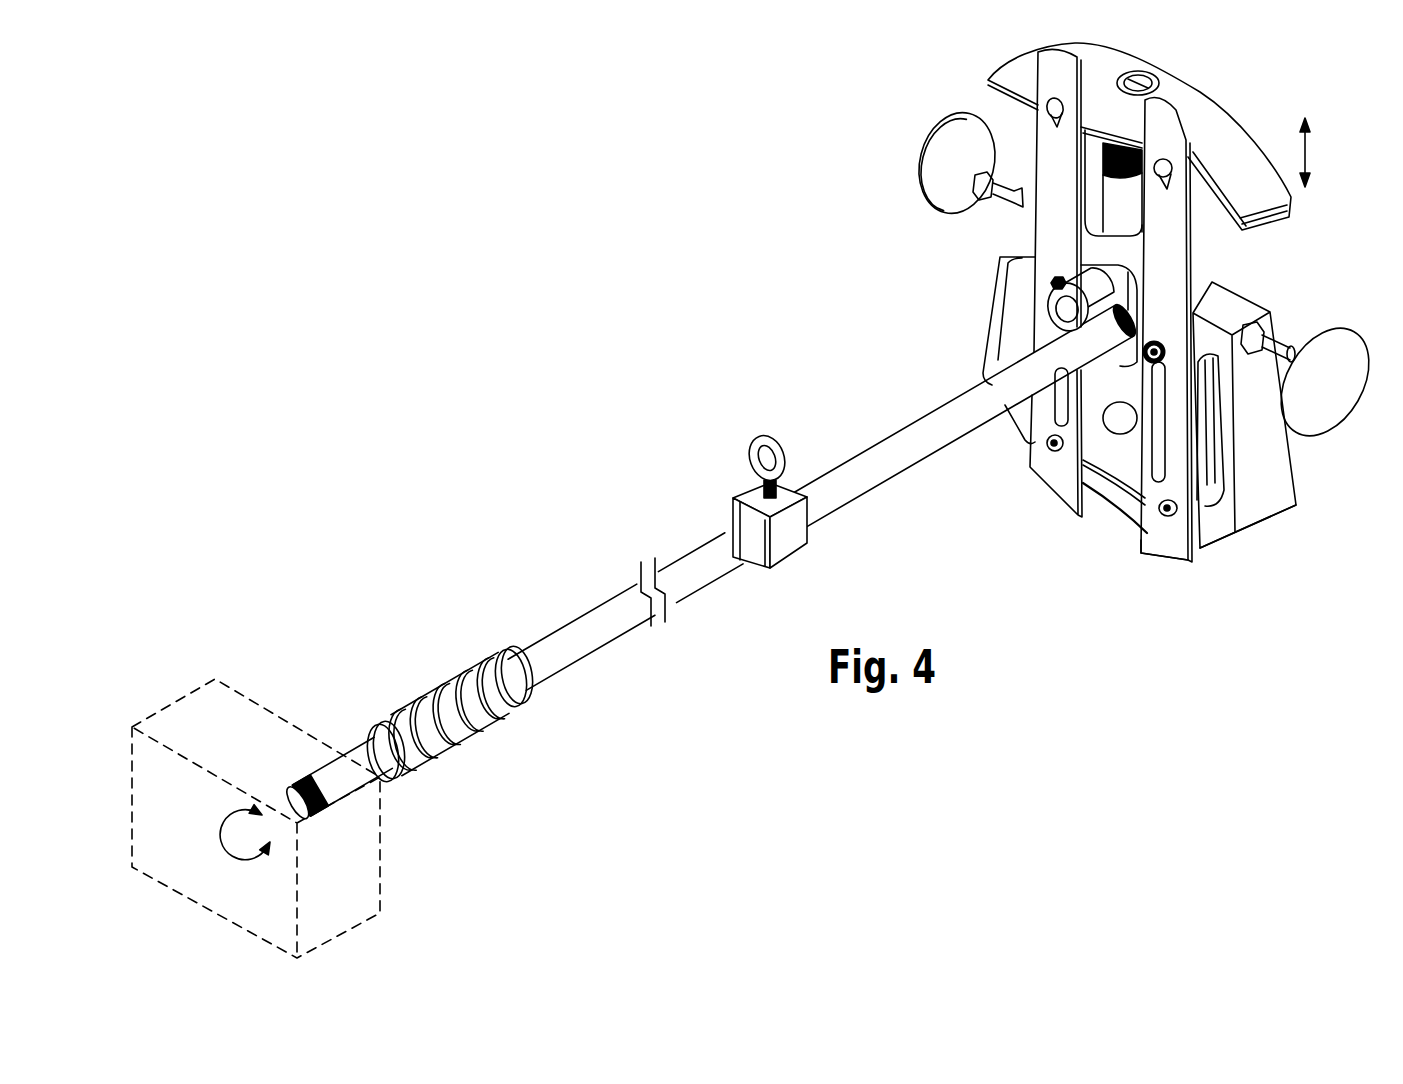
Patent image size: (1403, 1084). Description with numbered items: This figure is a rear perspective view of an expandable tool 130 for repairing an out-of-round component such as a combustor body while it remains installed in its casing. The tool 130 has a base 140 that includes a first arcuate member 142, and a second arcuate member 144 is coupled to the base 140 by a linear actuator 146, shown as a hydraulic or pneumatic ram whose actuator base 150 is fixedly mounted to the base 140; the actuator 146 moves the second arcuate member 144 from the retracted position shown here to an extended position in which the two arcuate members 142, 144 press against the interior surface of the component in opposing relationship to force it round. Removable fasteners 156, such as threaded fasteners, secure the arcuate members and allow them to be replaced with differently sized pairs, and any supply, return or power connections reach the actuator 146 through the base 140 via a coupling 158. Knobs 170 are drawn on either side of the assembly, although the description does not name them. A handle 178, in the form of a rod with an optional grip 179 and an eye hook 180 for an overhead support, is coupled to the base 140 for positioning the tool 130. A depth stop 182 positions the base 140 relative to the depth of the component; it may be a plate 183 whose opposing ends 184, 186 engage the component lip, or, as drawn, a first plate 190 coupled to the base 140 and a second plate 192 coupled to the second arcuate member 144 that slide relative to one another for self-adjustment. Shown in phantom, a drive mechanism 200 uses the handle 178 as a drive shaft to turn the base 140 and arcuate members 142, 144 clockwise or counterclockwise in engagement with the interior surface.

The expandable tool 130 is at (793, 125).
The base 140 is at (1308, 447).
The first arcuate member 142 is at (1228, 547).
The second arcuate member 144 is at (1213, 145).
The linear actuator 146 is at (1102, 186).
The actuator base 150 is at (1000, 258).
The removable fastener 156 is at (1150, 76).
The coupling 158 is at (1055, 322).
The knobs 170 is at (945, 150).
The handle 178 is at (587, 667).
The grip 179 is at (440, 698).
The eye hook 180 is at (780, 445).
The depth stop 182 is at (1153, 574).
The plate 183 is at (1165, 240).
The end of plate 184 is at (1057, 55).
The end of plate 186 is at (1072, 493).
The first plate 190 is at (1192, 540).
The second plate 192 is at (1167, 210).
The drive mechanism 200 is at (230, 715).